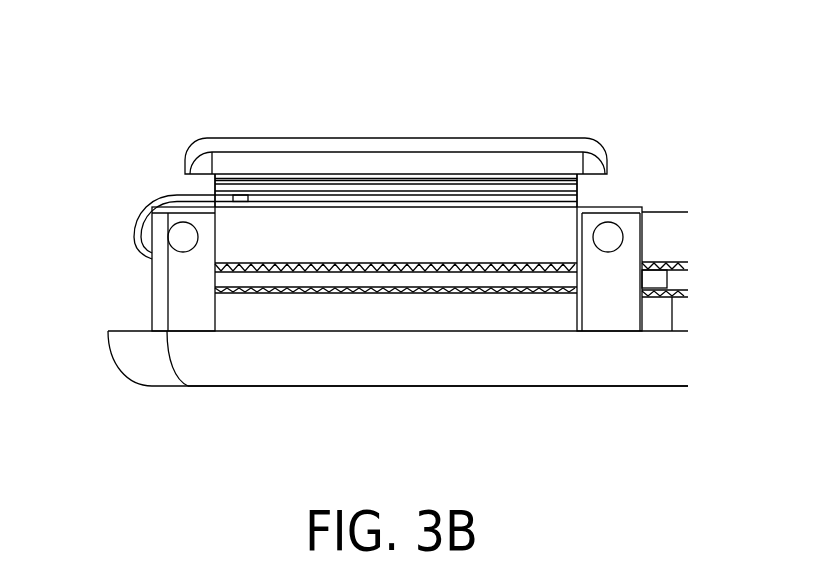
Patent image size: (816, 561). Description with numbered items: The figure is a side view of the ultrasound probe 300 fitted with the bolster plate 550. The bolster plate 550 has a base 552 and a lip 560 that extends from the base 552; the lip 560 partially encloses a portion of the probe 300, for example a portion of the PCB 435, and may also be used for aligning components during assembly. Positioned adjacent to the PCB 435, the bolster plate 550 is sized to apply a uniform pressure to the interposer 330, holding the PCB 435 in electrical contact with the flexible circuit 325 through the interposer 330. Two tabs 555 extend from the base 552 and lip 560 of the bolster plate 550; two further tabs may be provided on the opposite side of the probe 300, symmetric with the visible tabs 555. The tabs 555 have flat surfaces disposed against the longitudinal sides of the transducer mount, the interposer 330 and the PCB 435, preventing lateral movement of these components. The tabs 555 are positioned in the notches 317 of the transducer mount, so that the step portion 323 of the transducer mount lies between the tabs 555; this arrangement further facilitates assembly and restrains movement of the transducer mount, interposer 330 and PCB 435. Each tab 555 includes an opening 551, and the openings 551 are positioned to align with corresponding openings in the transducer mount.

The probe 300 is at (130, 102).
The notches 317 is at (176, 194).
The step portion 323 is at (448, 220).
The flexible circuit 325 is at (140, 210).
The interposer 330 is at (402, 293).
The PCB 435 is at (473, 320).
The bolster plate 550 is at (527, 393).
The opening 551 is at (197, 234).
The base 552 is at (316, 387).
The tabs 555 is at (160, 288).
The lip 560 is at (220, 372).